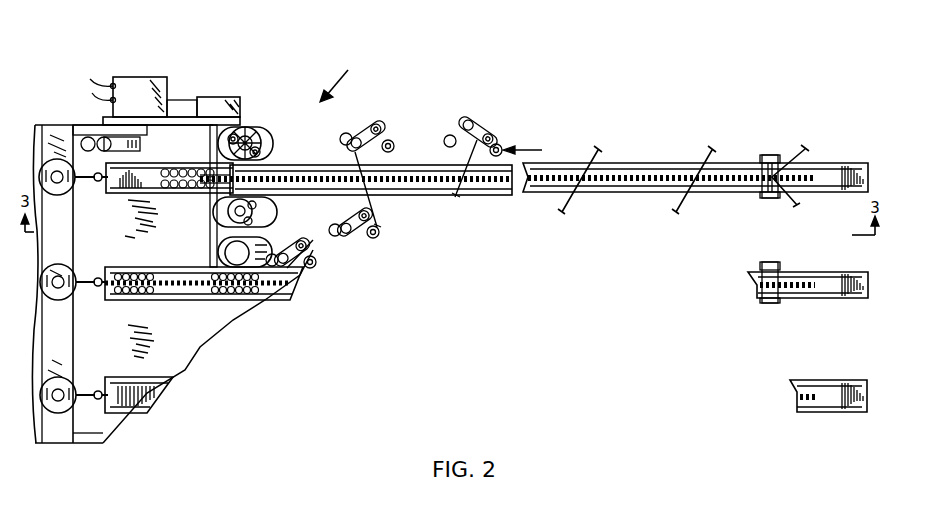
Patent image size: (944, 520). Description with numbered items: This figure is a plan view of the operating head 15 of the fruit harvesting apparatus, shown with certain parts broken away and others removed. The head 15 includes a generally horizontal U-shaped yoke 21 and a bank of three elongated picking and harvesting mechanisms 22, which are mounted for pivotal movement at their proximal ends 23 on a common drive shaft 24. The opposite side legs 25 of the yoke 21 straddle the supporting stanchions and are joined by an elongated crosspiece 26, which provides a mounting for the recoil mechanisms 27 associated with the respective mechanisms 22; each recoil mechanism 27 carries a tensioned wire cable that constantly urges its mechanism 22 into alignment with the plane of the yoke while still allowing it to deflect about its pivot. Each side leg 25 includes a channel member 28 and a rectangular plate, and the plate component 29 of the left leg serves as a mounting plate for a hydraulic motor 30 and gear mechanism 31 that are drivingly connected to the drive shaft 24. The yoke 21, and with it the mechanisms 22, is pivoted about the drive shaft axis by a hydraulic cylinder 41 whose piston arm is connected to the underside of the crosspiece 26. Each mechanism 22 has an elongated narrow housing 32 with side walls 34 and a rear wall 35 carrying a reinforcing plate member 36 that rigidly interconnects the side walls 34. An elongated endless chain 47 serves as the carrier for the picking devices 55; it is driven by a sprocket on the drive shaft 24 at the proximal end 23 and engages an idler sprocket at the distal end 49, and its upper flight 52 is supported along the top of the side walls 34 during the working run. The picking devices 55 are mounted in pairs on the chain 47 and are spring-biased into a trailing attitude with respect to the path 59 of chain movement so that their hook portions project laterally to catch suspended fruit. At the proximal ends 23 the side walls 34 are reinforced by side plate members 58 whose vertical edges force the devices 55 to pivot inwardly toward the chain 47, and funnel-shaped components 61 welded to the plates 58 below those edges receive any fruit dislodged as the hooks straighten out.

The operating head 15 is at (341, 77).
The yoke 21 is at (51, 125).
The picking and harvesting mechanism 22 is at (554, 192).
The proximal end 23 is at (170, 205).
The drive shaft 24 is at (210, 242).
The side leg 25 is at (80, 121).
The crosspiece 26 is at (78, 338).
The recoil mechanism 27 is at (68, 193).
The channel member 28 is at (147, 131).
The plate component 29 is at (214, 103).
The hydraulic motor 30 is at (142, 77).
The gear mechanism 31 is at (208, 97).
The housing 32 is at (810, 272).
The side wall 34 is at (636, 163).
The rear wall 35 is at (112, 300).
The reinforcing plate member 36 is at (101, 182).
The hydraulic cylinder 41 is at (140, 148).
The endless chain 47 is at (295, 165).
The distal end 49 is at (833, 163).
The upper flight 52 is at (440, 195).
The picking device 55 is at (460, 124).
The side plate member 58 is at (164, 193).
The path of movement 59 is at (536, 149).
The funnel-shaped component 61 is at (268, 138).